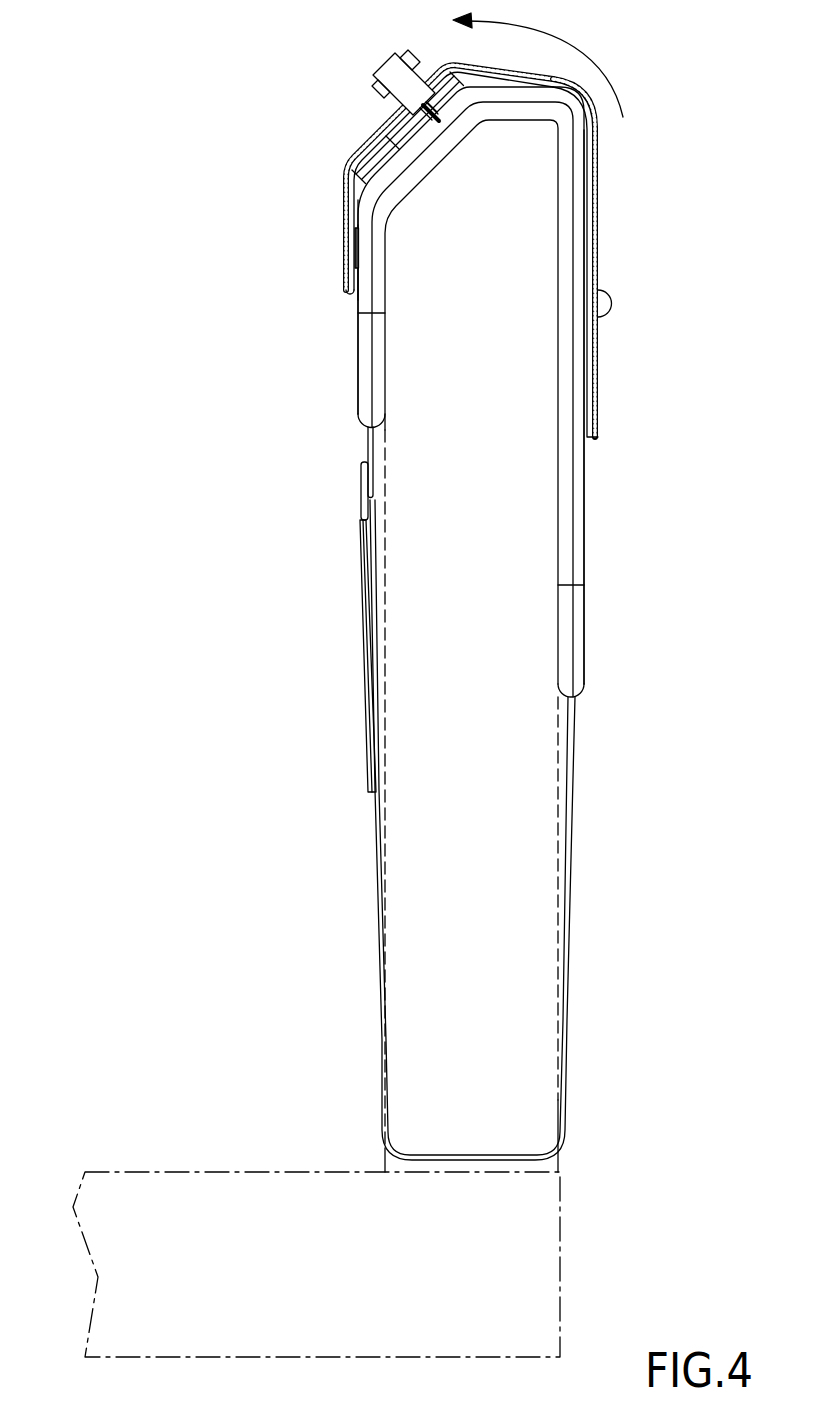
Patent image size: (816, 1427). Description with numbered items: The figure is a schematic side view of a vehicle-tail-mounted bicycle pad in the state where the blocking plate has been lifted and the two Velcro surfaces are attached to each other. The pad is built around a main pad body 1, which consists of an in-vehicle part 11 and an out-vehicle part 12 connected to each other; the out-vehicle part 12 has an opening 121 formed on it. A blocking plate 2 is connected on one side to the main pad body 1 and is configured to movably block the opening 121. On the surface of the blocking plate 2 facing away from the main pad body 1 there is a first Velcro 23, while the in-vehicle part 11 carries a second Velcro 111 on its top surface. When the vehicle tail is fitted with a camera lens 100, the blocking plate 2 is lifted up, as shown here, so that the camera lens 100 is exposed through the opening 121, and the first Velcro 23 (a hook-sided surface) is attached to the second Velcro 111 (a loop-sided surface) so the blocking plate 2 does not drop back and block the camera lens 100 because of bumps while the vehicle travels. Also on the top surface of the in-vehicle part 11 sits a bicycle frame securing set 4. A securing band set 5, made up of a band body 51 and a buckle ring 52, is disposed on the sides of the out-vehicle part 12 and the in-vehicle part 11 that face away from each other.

The main pad body 1 is at (601, 622).
The in-vehicle part 11 is at (358, 375).
The second Velcro 111 is at (358, 236).
The out-vehicle part 12 is at (584, 512).
The opening 121 is at (604, 212).
The camera lens 100 is at (605, 302).
The blocking plate 2 is at (347, 173).
The first Velcro 23 is at (357, 253).
The bicycle frame securing set 4 is at (362, 141).
The securing band set 5 is at (202, 450).
The band body 51 is at (363, 577).
The buckle ring 52 is at (363, 497).